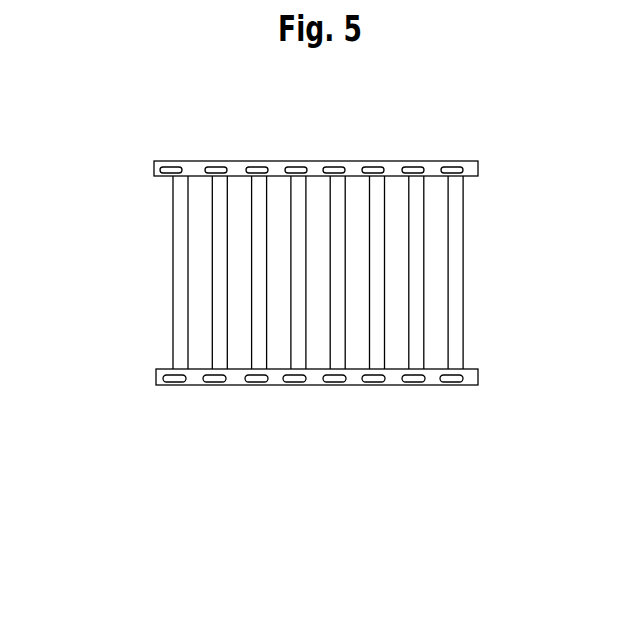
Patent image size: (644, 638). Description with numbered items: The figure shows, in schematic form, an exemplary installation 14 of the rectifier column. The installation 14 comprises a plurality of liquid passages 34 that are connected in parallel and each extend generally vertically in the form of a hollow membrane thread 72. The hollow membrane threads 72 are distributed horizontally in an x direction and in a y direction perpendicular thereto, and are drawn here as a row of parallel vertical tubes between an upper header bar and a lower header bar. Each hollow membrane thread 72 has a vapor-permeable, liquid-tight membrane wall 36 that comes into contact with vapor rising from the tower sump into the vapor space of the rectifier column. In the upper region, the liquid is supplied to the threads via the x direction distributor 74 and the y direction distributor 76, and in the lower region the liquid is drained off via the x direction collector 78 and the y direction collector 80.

The installation of the rectifier column 14 is at (235, 136).
The liquid passage 34 is at (456, 316).
The vapor-permeable, liquid-tight membrane wall 36 is at (450, 222).
The hollow membrane thread 72 is at (426, 288).
The x direction distributor 74 is at (470, 161).
The y direction distributor 76 is at (208, 170).
The x direction collector 78 is at (478, 383).
The y direction collector 80 is at (215, 380).